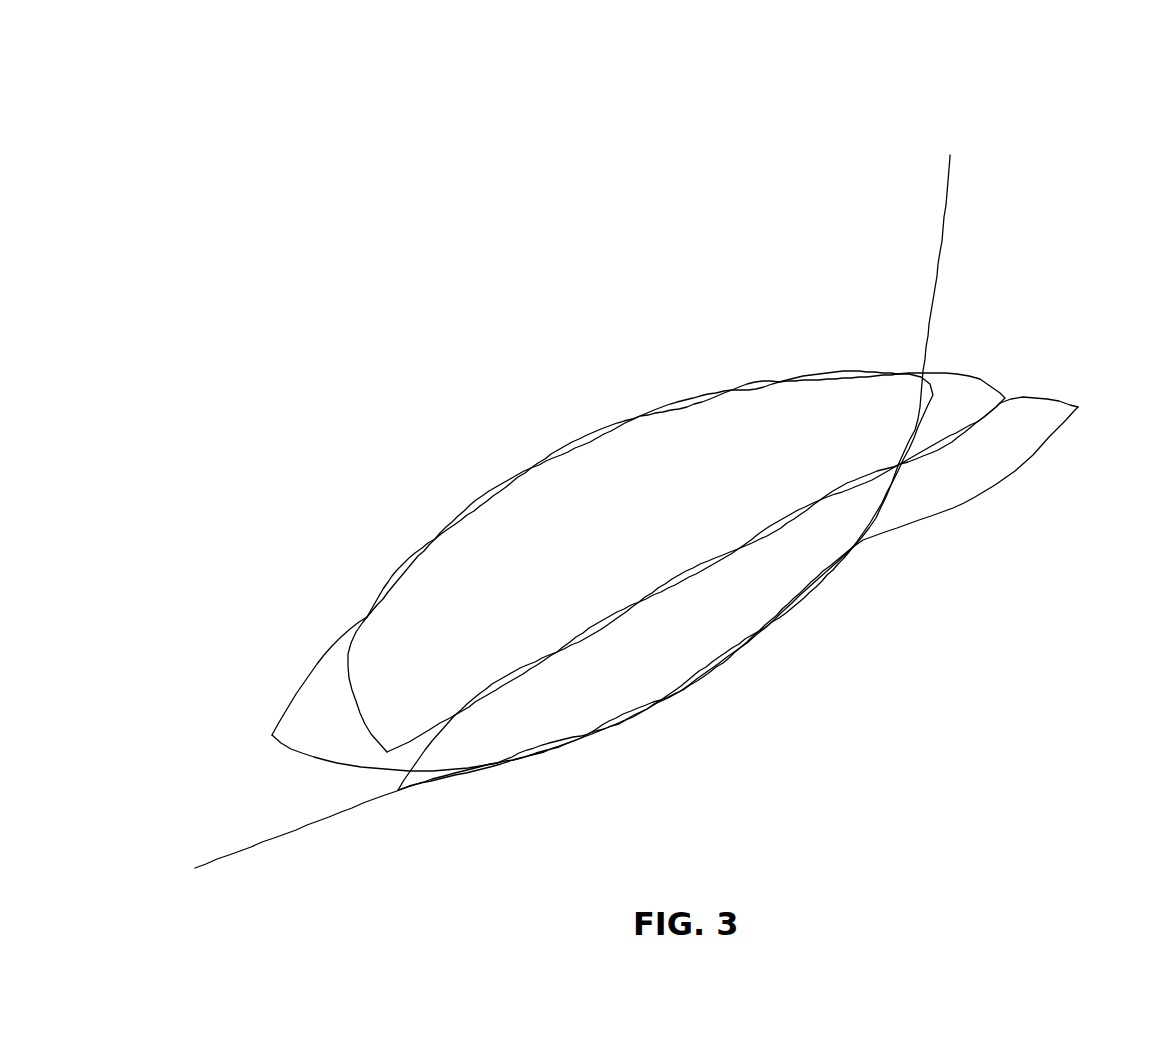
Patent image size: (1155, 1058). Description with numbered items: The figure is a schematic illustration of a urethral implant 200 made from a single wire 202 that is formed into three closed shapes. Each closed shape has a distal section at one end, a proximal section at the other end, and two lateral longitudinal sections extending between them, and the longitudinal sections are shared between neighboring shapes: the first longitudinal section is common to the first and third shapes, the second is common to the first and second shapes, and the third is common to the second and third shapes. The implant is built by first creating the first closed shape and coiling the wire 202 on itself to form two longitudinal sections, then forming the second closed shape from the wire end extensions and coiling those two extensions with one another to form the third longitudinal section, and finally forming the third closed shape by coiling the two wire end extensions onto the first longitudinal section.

The urethral implant 200 is at (638, 80).
The wire 202 is at (252, 843).